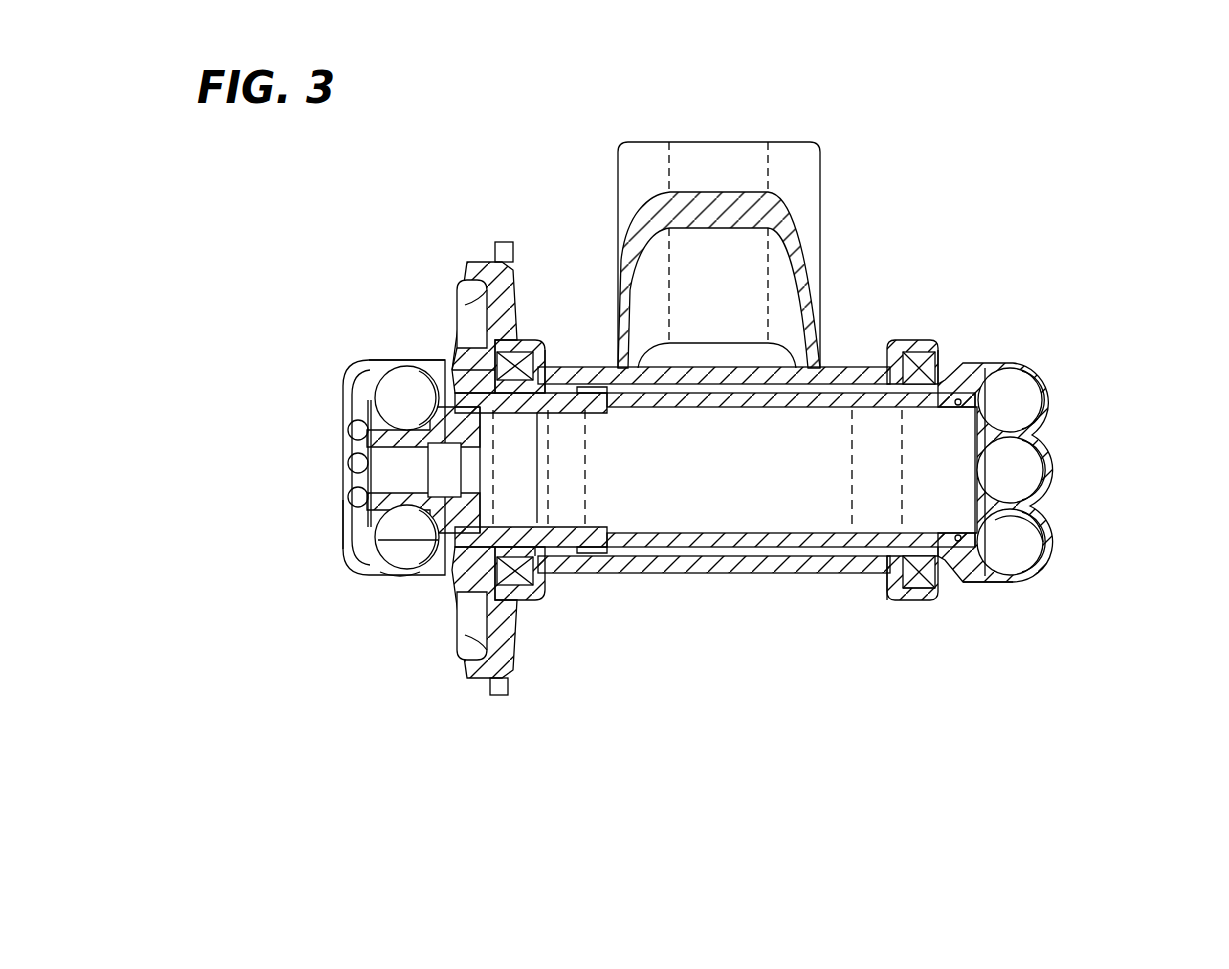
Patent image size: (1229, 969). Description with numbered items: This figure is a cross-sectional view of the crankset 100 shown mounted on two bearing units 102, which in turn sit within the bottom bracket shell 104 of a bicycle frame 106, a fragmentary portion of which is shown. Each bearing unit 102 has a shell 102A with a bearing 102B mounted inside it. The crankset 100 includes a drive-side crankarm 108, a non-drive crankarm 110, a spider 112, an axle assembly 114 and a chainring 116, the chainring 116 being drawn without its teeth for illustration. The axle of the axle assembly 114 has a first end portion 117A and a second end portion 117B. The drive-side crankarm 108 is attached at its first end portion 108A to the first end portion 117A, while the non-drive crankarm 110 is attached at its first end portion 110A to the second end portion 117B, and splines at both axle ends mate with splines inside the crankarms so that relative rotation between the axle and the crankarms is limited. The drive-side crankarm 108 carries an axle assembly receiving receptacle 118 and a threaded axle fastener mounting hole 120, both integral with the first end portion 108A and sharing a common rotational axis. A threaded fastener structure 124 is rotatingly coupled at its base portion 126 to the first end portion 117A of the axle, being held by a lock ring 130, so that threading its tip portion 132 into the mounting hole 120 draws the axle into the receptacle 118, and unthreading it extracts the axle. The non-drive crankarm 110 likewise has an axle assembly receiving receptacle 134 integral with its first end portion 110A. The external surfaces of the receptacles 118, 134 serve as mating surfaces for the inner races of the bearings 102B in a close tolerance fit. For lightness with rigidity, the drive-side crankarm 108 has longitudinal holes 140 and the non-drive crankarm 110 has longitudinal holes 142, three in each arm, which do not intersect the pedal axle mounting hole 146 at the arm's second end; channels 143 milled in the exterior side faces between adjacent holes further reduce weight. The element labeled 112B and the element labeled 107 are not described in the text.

The crankset 100 is at (1037, 360).
The bearing units 102 is at (537, 338).
The shell 102A is at (895, 603).
The bearing 102B is at (917, 590).
The bottom bracket shell 104 is at (820, 572).
The bicycle frame 106 is at (822, 142).
The inner tube 107 is at (805, 540).
The drive-side crankarm 108 is at (355, 562).
The first end portion of drive-side crankarm 108A is at (400, 577).
The non-drive crankarm 110 is at (1050, 388).
The first end portion of non-drive crankarm 110A is at (1015, 580).
The spider 112 is at (473, 260).
The flange arm channel 112B is at (458, 357).
The axle assembly 114 is at (692, 530).
The chainring 116 is at (510, 242).
The first end portion of axle 117A is at (522, 535).
The second end portion of axle 117B is at (943, 547).
The axle assembly receiving receptacle 118 is at (453, 352).
The axle fastener mounting hole 120 is at (350, 513).
The threaded fastener structure 124 is at (442, 482).
The base portion 126 is at (430, 362).
The lock ring 130 is at (455, 413).
The tip portion 132 is at (368, 490).
The axle assembly receiving receptacle 134 is at (940, 380).
The longitudinal holes 140 is at (383, 537).
The longitudinal holes 142 is at (1018, 542).
The channels 143 is at (363, 497).
The pedal axle mounting hole 146 is at (548, 350).